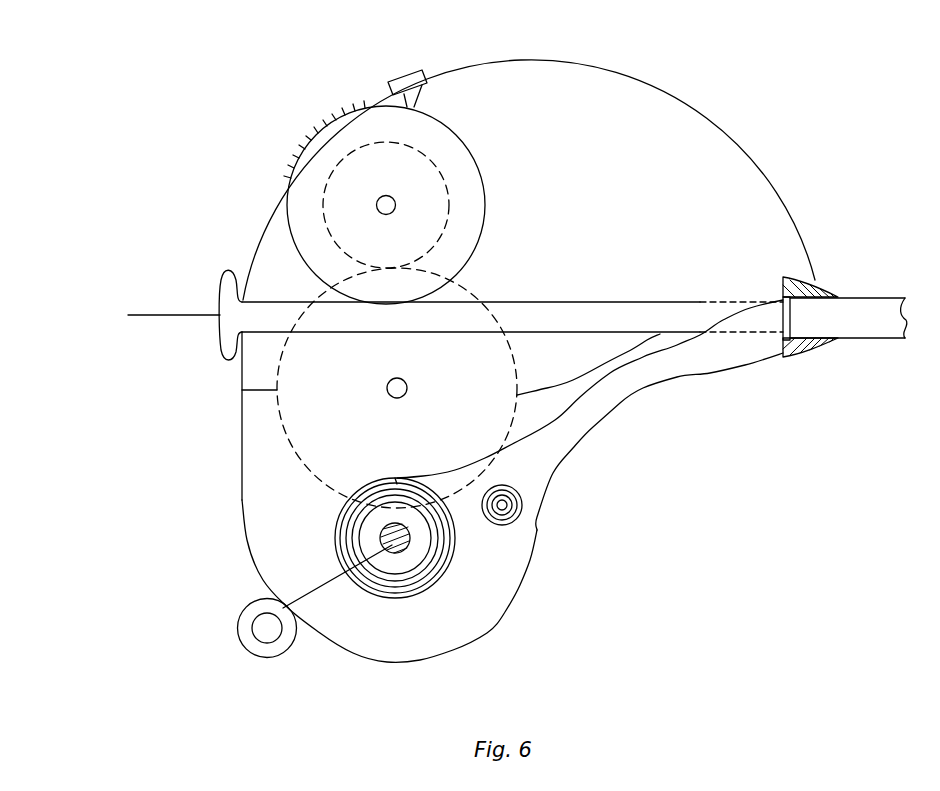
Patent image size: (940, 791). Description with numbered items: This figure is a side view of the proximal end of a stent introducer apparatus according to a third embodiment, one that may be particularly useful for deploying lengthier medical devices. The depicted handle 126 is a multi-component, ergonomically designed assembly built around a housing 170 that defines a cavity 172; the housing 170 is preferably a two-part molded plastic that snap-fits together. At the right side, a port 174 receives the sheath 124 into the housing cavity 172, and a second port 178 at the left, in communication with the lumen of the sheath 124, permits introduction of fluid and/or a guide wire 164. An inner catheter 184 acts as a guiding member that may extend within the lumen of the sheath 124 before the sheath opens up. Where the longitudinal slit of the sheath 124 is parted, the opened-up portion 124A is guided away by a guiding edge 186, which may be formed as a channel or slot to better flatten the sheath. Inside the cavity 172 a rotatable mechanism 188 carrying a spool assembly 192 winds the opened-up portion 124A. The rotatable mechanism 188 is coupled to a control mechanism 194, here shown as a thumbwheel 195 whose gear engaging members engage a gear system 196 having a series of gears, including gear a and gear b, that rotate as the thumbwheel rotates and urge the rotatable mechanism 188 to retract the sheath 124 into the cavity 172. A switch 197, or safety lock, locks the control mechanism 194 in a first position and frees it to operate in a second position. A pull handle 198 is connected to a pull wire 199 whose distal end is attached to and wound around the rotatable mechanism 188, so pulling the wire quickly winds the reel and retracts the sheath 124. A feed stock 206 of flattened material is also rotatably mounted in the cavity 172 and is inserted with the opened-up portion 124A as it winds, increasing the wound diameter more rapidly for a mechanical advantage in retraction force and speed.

The handle 126 is at (270, 117).
The control mechanism 194 is at (318, 124).
The switch 197 is at (410, 81).
The thumbwheel 195 is at (444, 120).
The gear a is at (447, 222).
The gear system 196 is at (305, 412).
The gear b is at (516, 370).
The port 178 is at (208, 300).
The guide wire 164 is at (168, 318).
The inner catheter 184 is at (527, 300).
The guiding edge 186 is at (580, 375).
The sheath 124 is at (850, 305).
The port 174 is at (840, 340).
The opened-up portion 124A is at (627, 368).
The rotatable mechanism 188 is at (468, 553).
The spool assembly 192 is at (378, 537).
The pull wire 199 is at (323, 597).
The feed stock 206 is at (523, 492).
The pull handle 198 is at (265, 658).
The housing 170 is at (498, 630).
The cavity 172 is at (429, 620).